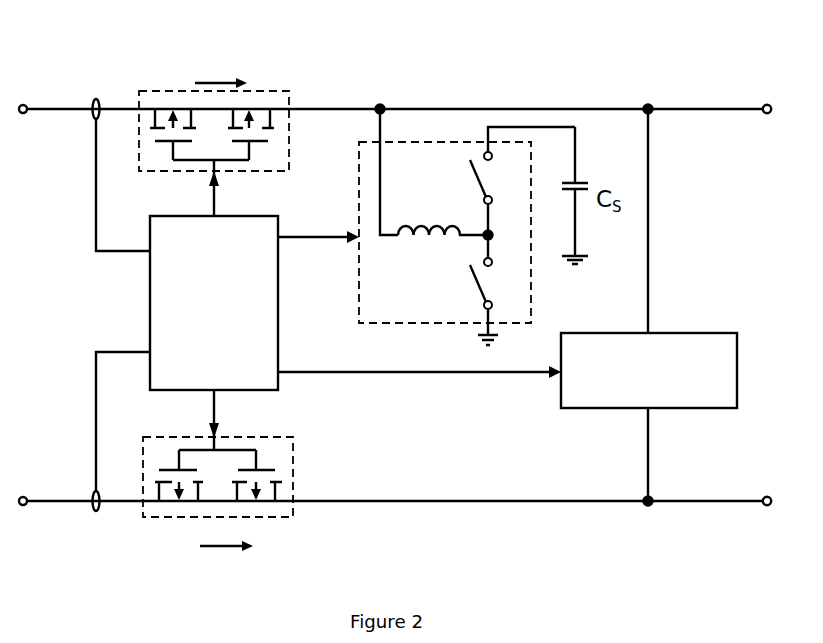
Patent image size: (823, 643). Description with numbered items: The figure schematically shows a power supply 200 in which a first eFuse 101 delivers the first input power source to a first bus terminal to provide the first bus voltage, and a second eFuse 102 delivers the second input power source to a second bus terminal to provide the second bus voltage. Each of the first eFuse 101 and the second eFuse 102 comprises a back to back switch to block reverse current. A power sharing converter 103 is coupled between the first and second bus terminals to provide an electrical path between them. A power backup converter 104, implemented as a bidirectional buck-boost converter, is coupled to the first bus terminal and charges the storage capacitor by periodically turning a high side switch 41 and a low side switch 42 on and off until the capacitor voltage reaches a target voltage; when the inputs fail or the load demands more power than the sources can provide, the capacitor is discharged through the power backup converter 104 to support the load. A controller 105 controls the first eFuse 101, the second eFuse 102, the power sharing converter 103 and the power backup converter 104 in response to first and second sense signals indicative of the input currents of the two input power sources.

The power supply 200 is at (104, 51).
The first eFuse 101 is at (238, 113).
The second eFuse 102 is at (237, 494).
The power sharing converter 103 is at (649, 370).
The power backup converter 104 is at (467, 227).
The controller 105 is at (355, 304).
The high side switch 41 is at (511, 179).
The low side switch 42 is at (472, 292).